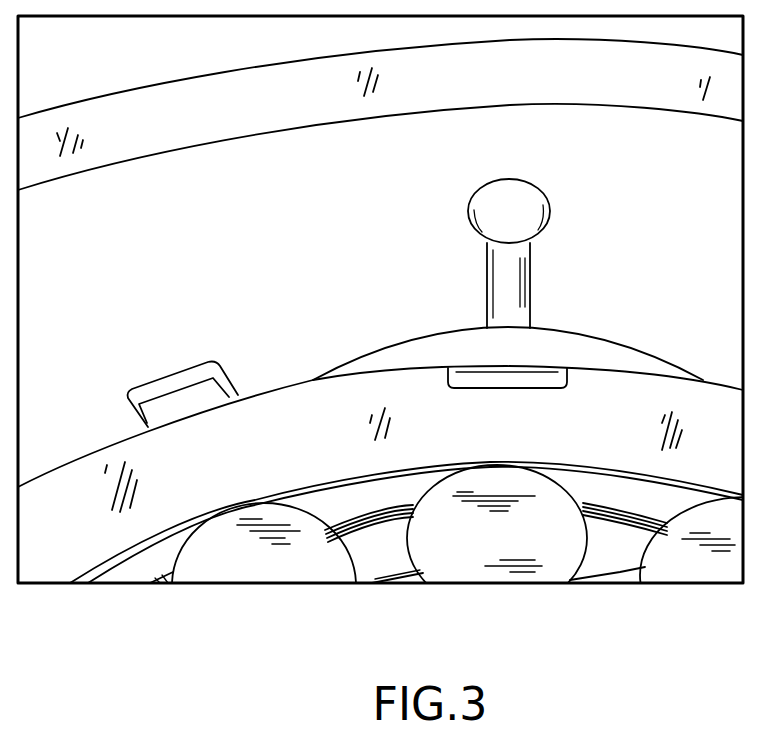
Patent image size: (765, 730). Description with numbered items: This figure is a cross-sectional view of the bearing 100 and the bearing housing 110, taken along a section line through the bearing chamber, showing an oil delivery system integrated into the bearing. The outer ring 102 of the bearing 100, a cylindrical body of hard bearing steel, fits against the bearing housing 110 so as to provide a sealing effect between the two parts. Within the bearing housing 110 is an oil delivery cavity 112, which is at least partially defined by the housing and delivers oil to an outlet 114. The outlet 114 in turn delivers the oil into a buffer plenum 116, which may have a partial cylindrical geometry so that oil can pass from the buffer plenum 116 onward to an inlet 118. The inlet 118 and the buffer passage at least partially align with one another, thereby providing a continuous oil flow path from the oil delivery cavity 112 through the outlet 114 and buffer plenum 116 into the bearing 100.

The bearing 100 is at (254, 558).
The outer ring 102 is at (289, 412).
The bearing housing 110 is at (123, 251).
The oil delivery cavity 112 is at (489, 197).
The outlet 114 is at (498, 273).
The buffer plenum 116 is at (430, 345).
The inlet 118 is at (505, 380).